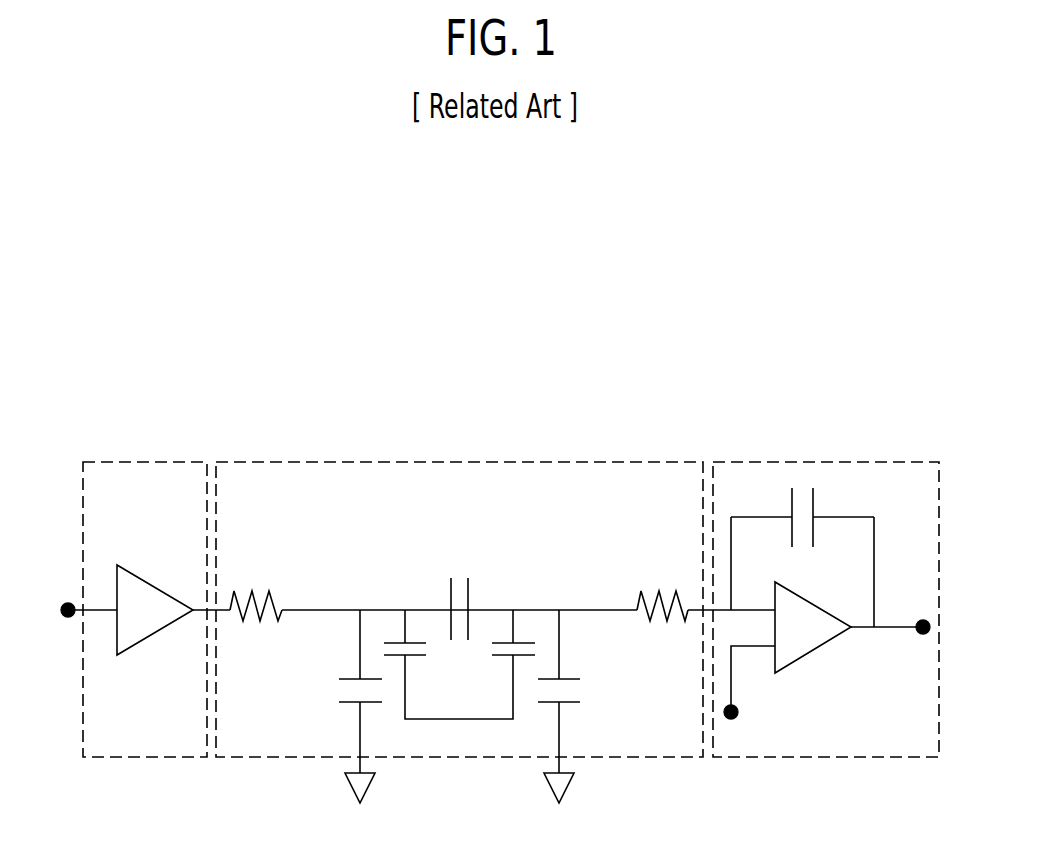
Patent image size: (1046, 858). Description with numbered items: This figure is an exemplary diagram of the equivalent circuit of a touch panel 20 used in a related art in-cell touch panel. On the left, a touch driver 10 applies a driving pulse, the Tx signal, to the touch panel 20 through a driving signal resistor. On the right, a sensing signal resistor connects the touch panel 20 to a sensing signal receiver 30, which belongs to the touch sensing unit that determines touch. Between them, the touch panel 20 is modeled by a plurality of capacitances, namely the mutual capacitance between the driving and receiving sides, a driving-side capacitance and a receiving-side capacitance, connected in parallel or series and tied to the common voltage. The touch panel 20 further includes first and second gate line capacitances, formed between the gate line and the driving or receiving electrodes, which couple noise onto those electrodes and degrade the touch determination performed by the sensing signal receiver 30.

The touch driver 10 is at (135, 462).
The touch panel 20 is at (435, 462).
The sensing signal receiver 30 is at (825, 462).